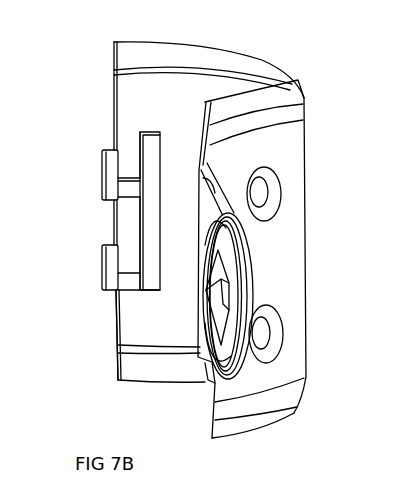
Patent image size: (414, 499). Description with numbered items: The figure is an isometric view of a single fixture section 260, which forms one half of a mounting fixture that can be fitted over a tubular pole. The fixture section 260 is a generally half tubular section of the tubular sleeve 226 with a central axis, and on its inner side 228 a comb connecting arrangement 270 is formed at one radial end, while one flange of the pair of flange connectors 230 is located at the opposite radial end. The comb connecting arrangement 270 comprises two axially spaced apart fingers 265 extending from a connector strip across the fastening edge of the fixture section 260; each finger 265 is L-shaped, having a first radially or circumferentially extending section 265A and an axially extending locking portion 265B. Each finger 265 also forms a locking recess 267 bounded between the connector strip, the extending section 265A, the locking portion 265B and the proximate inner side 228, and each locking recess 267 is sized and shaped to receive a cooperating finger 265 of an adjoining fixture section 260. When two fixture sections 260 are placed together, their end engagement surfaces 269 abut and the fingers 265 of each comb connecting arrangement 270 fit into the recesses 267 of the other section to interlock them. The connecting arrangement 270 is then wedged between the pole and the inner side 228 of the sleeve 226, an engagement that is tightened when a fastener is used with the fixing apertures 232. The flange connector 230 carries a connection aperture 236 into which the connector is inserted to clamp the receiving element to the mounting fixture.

The tubular sleeve 226 is at (275, 150).
The inner side 228 is at (175, 239).
The flange connector 230 is at (240, 274).
The fixing apertures 232 is at (260, 193).
The connection aperture 236 is at (214, 306).
The fixture section 260 is at (264, 440).
The finger 265 is at (158, 158).
The radially/circumferentially extending section 265A is at (132, 190).
The axially extending locking portion 265B is at (112, 167).
The locking recess 267 is at (127, 140).
The end engagement surface 269 is at (117, 365).
The comb connecting arrangement 270 is at (147, 282).